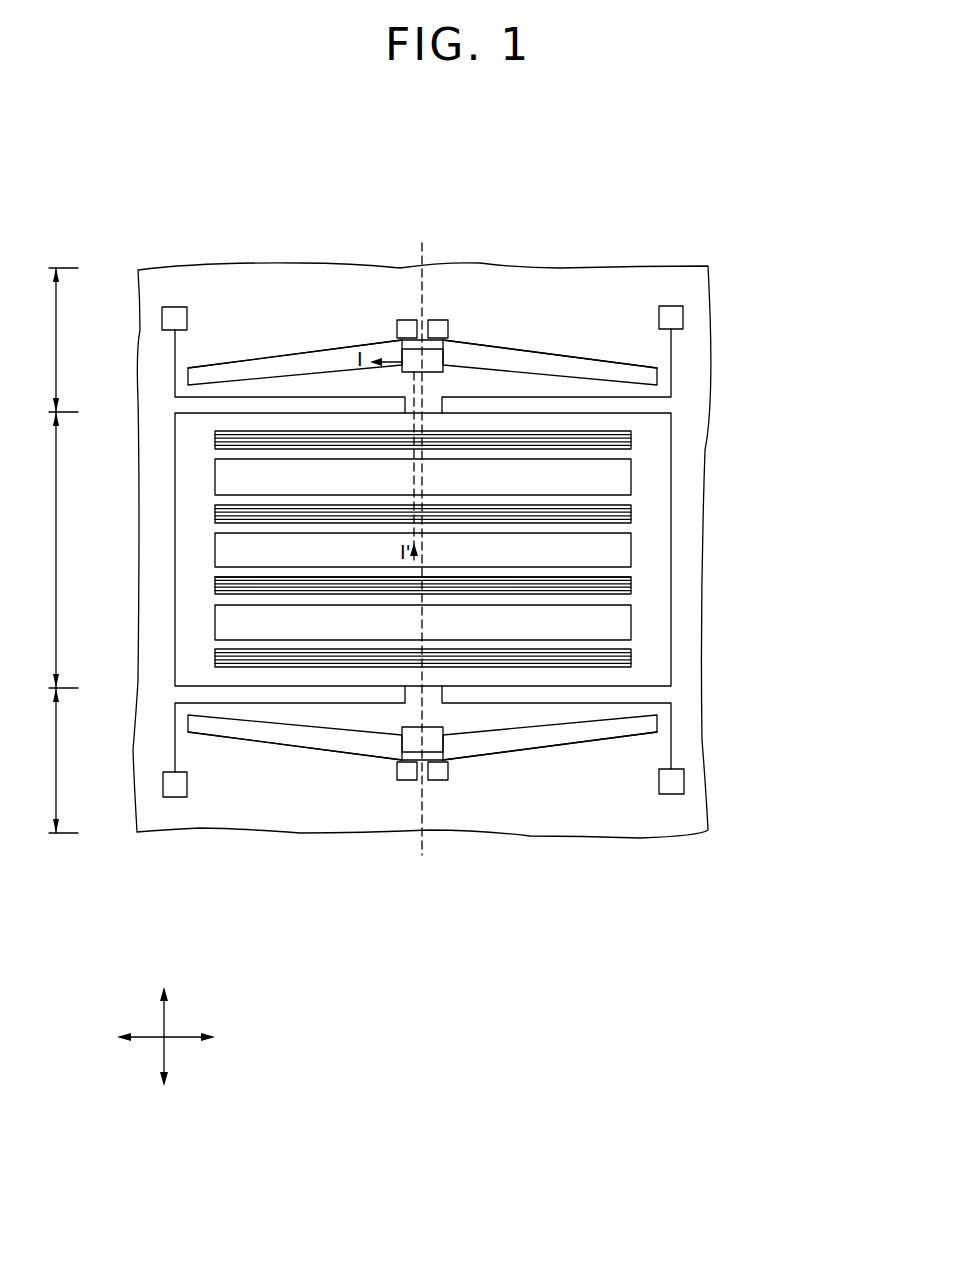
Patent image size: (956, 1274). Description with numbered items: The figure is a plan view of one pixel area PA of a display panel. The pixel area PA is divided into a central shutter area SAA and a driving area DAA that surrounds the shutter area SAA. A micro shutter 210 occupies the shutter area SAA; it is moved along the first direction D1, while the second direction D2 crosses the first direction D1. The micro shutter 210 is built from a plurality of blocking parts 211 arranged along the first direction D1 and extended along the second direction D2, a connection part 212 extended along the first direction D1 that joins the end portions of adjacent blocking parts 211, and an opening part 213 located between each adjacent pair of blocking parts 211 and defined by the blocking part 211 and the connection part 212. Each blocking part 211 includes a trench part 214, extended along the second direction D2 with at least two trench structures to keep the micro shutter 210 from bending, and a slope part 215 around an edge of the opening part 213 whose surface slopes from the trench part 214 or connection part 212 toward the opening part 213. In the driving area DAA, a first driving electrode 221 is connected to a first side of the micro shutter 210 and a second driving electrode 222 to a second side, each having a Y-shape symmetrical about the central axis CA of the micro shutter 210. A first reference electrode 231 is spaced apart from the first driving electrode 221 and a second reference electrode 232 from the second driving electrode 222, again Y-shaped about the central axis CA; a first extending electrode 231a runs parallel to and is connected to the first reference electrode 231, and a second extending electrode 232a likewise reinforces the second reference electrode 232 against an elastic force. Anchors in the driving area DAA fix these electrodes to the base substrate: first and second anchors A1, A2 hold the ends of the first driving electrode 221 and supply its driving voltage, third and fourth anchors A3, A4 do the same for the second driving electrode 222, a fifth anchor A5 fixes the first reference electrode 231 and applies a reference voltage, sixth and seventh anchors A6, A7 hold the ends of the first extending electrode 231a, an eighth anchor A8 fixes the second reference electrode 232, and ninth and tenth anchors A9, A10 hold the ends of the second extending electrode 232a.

The pixel area PA is at (296, 180).
The central axis CA is at (423, 252).
The driving area DAA is at (47, 550).
The shutter area SAA is at (38, 550).
The micro shutter 210 is at (190, 572).
The blocking part 211 is at (513, 549).
The connection part 212 is at (660, 523).
The opening part 213 is at (603, 476).
The trench part 214 is at (630, 583).
The slope part 215 is at (615, 573).
The first driving electrode 221 is at (175, 360).
The second driving electrode 222 is at (175, 754).
The first reference electrode 231 is at (327, 370).
The first extending electrode 231a is at (267, 352).
The second reference electrode 232 is at (322, 727).
The second extending electrode 232a is at (267, 744).
The first anchor A1 is at (175, 307).
The second anchor A2 is at (671, 306).
The third anchor A3 is at (175, 787).
The fourth anchor A4 is at (672, 785).
The fifth anchor A5 is at (402, 350).
The sixth anchor A6 is at (402, 320).
The seventh anchor A7 is at (437, 320).
The eighth anchor A8 is at (402, 747).
The ninth anchor A9 is at (405, 781).
The tenth anchor A10 is at (435, 782).
The first direction D1 is at (166, 1050).
The second direction D2 is at (182, 1038).